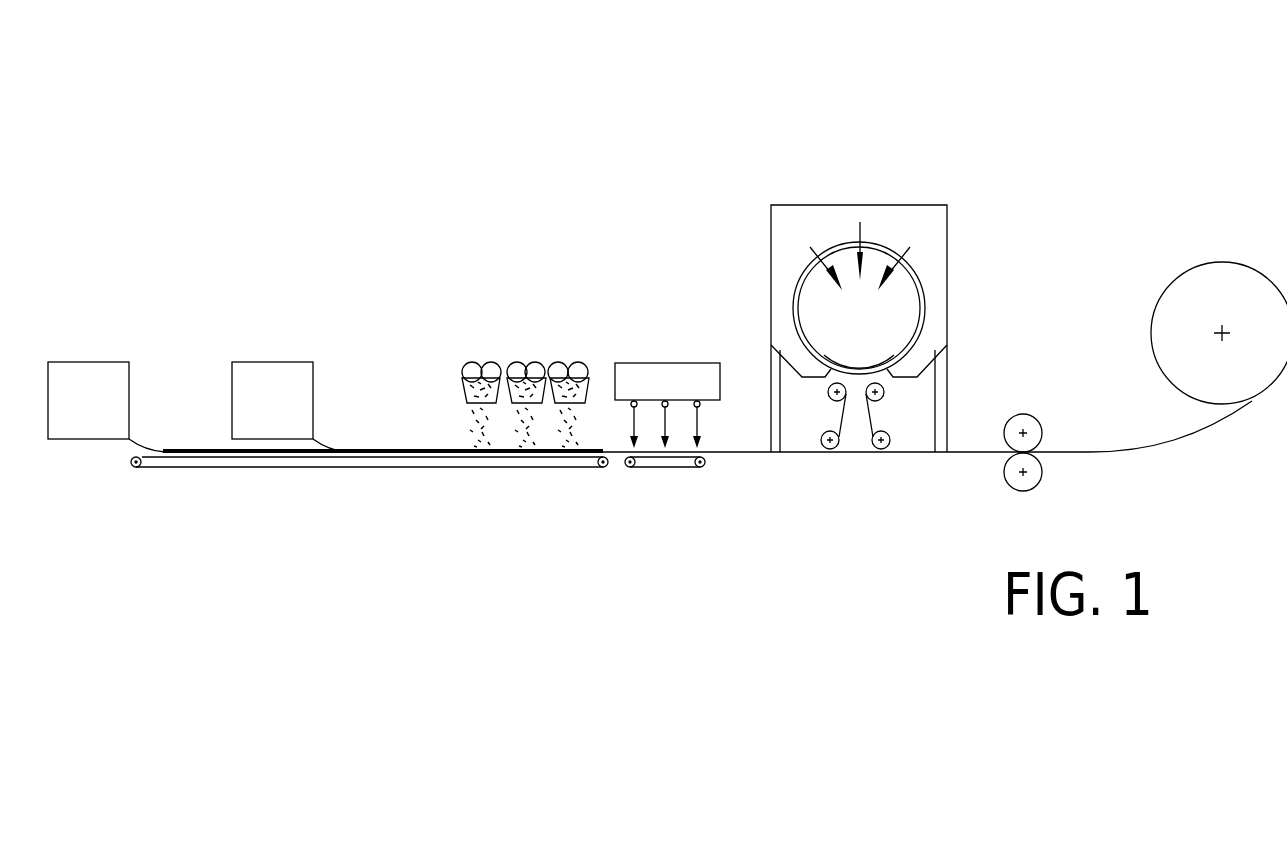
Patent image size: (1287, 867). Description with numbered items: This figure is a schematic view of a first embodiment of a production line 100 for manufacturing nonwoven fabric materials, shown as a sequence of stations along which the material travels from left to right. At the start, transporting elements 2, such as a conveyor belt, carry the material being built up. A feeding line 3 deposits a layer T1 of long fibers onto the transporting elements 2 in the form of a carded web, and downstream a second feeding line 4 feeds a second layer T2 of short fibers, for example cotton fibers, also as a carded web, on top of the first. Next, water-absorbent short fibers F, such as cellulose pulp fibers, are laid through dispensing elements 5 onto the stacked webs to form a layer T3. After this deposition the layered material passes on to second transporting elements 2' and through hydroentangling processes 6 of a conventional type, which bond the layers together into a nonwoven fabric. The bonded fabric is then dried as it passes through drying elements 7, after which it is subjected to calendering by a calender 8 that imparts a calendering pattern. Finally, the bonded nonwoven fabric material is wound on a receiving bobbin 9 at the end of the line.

The production line 100 is at (282, 161).
The transporting elements 2 is at (368, 506).
The second transporting elements 2' is at (665, 523).
The feeding line 3 is at (98, 362).
The second feeding line 4 is at (290, 362).
The dispensing elements 5 is at (575, 348).
The hydroentangling processes 6 is at (660, 352).
The drying elements 7 is at (958, 246).
The calender 8 is at (1040, 404).
The receiving bobbin 9 is at (1245, 262).
The layer of long fibers T1 is at (141, 447).
The second layer of short fibers T2 is at (331, 447).
The layer of water-absorbent short fibers T3 is at (586, 445).
The water-absorbent short fibers F is at (583, 405).